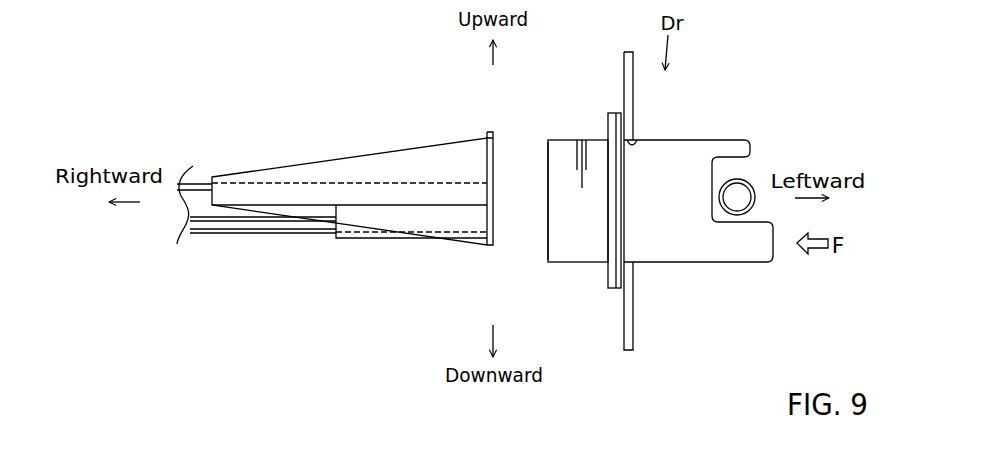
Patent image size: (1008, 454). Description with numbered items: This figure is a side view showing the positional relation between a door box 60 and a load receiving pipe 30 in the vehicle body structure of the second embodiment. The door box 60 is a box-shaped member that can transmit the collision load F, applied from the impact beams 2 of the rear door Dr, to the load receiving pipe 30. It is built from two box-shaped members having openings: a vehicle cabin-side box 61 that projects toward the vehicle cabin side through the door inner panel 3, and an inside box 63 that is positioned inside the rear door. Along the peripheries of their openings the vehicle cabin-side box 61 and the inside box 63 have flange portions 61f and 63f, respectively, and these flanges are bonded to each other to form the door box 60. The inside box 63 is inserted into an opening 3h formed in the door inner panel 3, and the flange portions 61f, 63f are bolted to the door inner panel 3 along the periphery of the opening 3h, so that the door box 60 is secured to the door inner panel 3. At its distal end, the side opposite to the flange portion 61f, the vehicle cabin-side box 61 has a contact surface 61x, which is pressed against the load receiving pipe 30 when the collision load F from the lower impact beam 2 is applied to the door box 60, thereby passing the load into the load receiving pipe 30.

The impact beam 2 is at (748, 183).
The door inner panel 3 is at (630, 91).
The opening 3h is at (634, 146).
The load receiving pipe 30 is at (368, 150).
The door box 60 is at (633, 202).
The vehicle cabin-side box 61 is at (584, 228).
The flange portion 61f is at (614, 290).
The contact surface 61x is at (548, 226).
The inside box 63 is at (676, 236).
The flange portion 63f is at (620, 186).